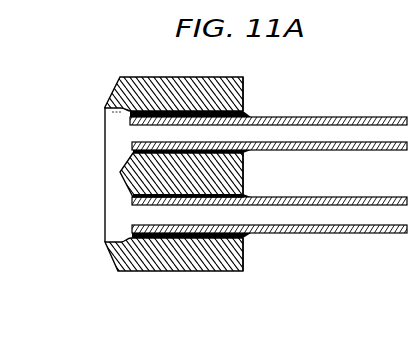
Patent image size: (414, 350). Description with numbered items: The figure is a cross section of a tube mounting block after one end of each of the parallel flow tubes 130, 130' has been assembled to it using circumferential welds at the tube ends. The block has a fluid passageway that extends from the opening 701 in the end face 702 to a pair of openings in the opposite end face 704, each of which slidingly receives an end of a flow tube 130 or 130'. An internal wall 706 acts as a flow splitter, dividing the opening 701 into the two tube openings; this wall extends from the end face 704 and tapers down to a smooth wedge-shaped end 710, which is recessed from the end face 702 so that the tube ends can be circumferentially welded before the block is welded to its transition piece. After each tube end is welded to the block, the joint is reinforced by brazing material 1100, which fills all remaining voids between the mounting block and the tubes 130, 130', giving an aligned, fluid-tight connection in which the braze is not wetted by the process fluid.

The opening 701 is at (105, 117).
The end face 702 is at (104, 259).
The end face 704 is at (242, 269).
The internal wall 706 is at (148, 165).
The wedge-shaped end 710 is at (160, 172).
The flow tube 130 is at (268, 114).
The flow tube 130' is at (269, 201).
The brazing material 1100 is at (243, 112).